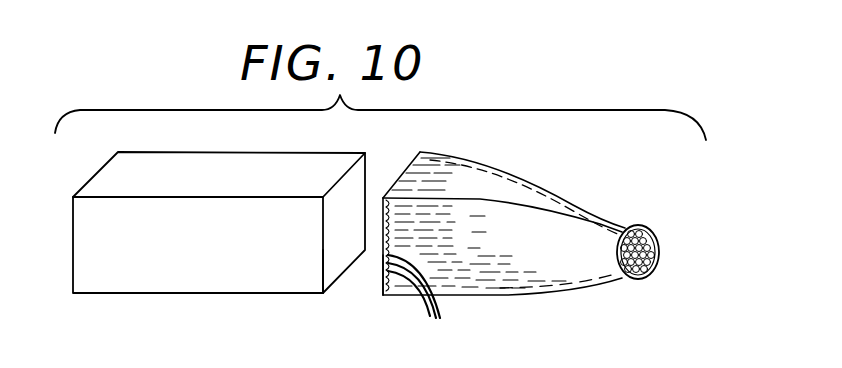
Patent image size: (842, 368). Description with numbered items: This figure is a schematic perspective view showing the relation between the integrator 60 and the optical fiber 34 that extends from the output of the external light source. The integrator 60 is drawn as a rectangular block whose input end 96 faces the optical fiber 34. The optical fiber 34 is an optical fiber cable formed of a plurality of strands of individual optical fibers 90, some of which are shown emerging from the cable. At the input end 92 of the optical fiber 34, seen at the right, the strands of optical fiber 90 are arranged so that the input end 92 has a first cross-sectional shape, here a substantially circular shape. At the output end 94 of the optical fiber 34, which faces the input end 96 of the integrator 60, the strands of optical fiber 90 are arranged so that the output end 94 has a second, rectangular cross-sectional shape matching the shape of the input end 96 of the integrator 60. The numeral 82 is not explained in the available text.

The integrator 60 is at (246, 152).
The input end of the integrator 96 is at (339, 262).
The optical fiber 34 is at (545, 158).
The strands of individual optical fibers 90 is at (434, 304).
The output end of the optical fiber 94 is at (387, 296).
The input end of the optical fiber 92 is at (641, 281).
The fiber ends 82 is at (659, 254).